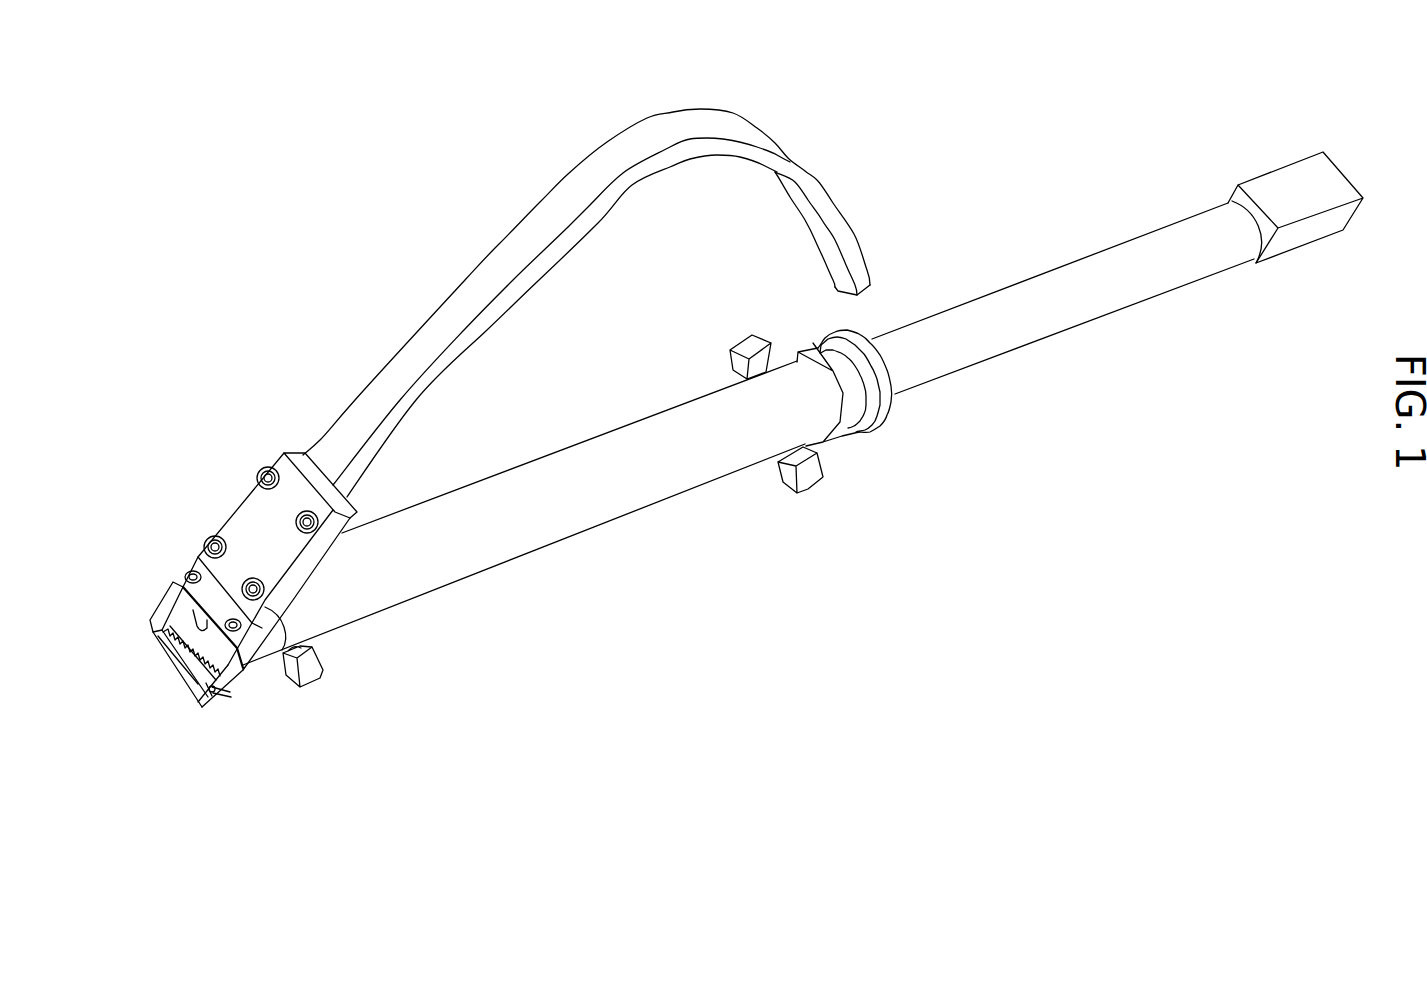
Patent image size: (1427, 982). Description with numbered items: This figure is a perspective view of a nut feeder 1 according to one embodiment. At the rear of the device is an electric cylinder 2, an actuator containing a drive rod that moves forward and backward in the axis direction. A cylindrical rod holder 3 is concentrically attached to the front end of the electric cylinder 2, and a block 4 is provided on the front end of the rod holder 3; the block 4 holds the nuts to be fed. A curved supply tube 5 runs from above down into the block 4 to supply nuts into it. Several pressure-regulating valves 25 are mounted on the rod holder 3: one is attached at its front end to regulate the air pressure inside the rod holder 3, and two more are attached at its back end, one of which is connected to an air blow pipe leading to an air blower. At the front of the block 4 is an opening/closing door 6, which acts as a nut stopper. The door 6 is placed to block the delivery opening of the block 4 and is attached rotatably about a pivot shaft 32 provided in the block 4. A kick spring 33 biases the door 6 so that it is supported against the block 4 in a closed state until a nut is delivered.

The nut feeder 1 is at (950, 160).
The electric cylinder 2 is at (1108, 257).
The rod holder 3 is at (573, 528).
The block 4 is at (240, 665).
The supply tube 5 is at (488, 273).
The opening/closing door 6 is at (162, 588).
The pressure-regulating valve 25 is at (740, 342).
The pivot shaft 32 is at (217, 697).
The kick spring 33 is at (180, 660).